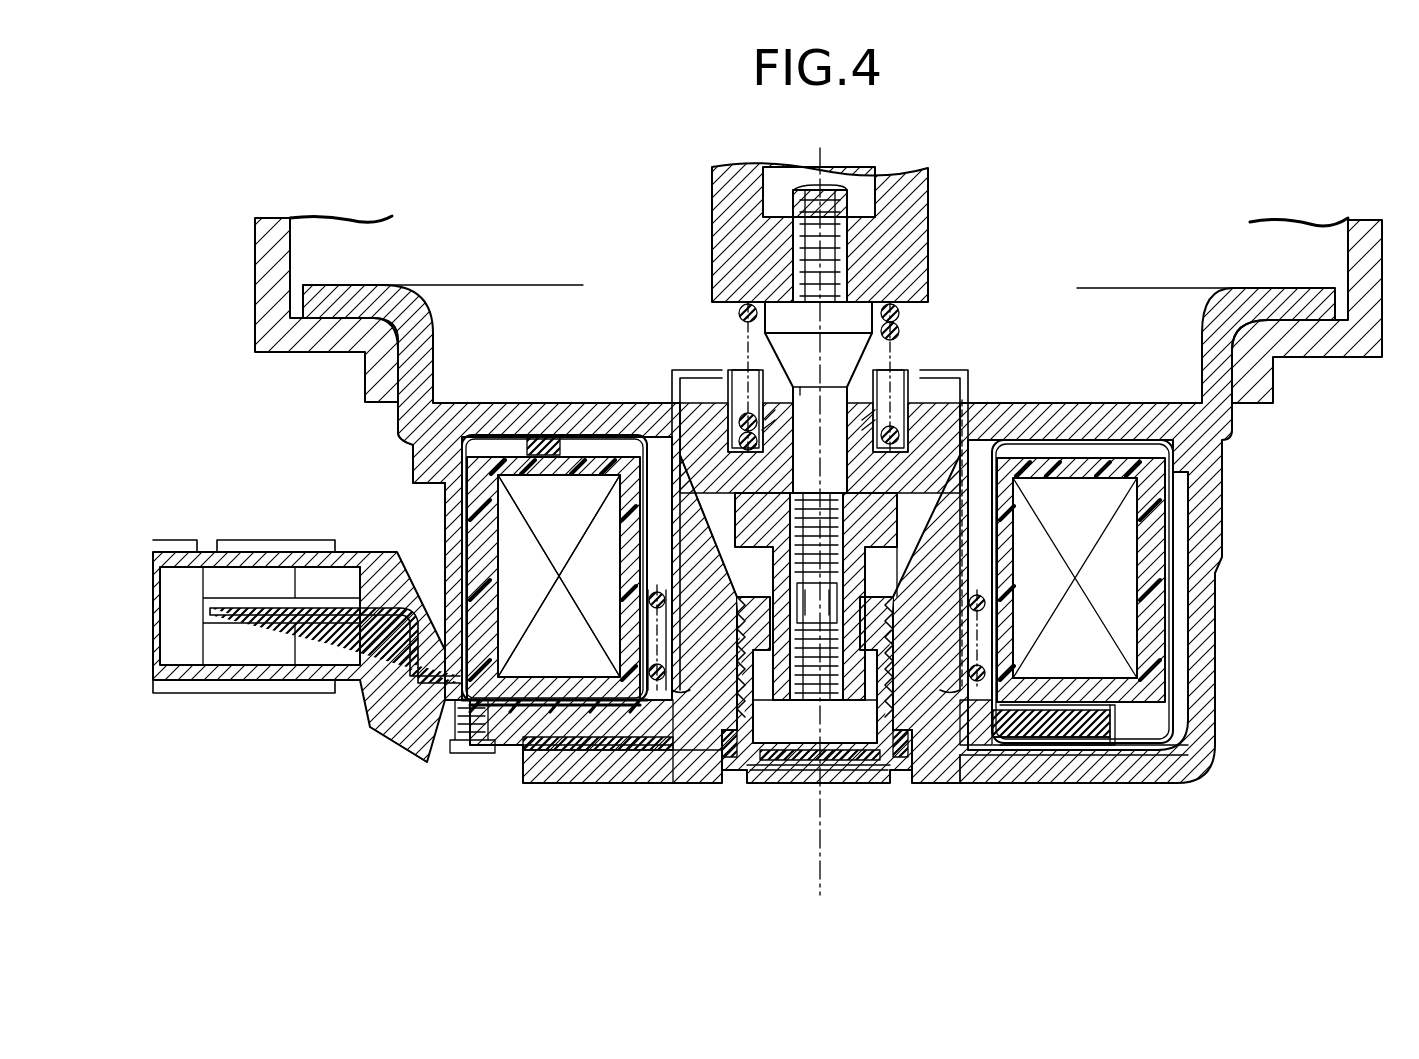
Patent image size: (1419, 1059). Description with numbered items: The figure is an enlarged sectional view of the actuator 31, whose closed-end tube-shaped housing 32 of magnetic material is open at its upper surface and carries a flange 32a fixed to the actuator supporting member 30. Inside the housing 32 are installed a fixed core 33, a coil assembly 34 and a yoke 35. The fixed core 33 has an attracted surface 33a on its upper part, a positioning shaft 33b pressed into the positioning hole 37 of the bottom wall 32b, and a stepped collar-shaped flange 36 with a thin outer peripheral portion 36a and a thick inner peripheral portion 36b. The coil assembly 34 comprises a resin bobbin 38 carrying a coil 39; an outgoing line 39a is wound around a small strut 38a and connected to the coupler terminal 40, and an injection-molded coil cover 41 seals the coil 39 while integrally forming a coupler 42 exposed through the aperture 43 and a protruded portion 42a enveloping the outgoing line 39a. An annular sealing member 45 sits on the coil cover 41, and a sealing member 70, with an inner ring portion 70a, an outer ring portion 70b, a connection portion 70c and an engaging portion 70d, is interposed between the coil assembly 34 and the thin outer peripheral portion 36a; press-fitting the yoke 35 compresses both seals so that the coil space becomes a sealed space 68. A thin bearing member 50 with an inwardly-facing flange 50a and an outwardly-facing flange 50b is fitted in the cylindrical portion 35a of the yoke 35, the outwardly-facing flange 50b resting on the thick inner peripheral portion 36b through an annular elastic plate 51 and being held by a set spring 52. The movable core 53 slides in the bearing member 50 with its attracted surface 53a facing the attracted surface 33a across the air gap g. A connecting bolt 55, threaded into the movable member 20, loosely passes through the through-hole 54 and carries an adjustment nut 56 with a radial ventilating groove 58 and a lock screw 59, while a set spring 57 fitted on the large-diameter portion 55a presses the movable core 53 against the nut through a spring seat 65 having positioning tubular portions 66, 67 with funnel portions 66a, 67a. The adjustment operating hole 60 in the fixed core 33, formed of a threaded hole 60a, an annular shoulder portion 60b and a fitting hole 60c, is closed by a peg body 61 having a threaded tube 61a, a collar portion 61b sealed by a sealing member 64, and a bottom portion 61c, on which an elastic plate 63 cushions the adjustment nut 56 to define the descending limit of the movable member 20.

The movable member 20 is at (910, 194).
The actuator supporting member 30 is at (270, 250).
The actuator 31 is at (1202, 626).
The housing 32 is at (1228, 524).
The flange 32a is at (1293, 300).
The bottom wall 32b is at (975, 775).
The fixed core 33 is at (968, 592).
The attracted surface 33a is at (1017, 626).
The positioning shaft 33b is at (930, 788).
The coil assembly 34 is at (528, 492).
The yoke 35 is at (1052, 405).
The cylindrical portion 35a is at (1000, 518).
The flange 36 is at (675, 846).
The thin outer peripheral portion 36a is at (578, 775).
The thick inner peripheral portion 36b is at (655, 760).
The positioning hole 37 is at (960, 788).
The bobbin 38 is at (628, 537).
The small strut 38a is at (478, 756).
The coil 39 is at (545, 637).
The outgoing line 39a is at (450, 750).
The coupler terminal 40 is at (236, 620).
The coil cover 41 is at (475, 450).
The coupler 42 is at (260, 548).
The protruded portion 42a is at (395, 738).
The aperture 43 is at (430, 486).
The sealing member 45 is at (547, 435).
The bearing member 50 is at (655, 448).
The inwardly-facing flange 50a is at (678, 372).
The outwardly-facing flange 50b is at (620, 712).
The annular elastic plate 51 is at (700, 735).
The set spring 52 is at (648, 600).
The movable core 53 is at (963, 420).
The attracted surface 53a is at (970, 498).
The through-hole 54 is at (855, 480).
The connecting bolt 55 is at (850, 403).
The large-diameter portion 55a is at (775, 310).
The adjustment nut 56 is at (770, 640).
The set spring 57 is at (902, 328).
The radial ventilating groove 58 is at (745, 496).
The lock screw 59 is at (822, 687).
The adjustment operating hole 60 is at (905, 790).
The threaded hole 60a is at (722, 655).
The annular shoulder portion 60b is at (750, 748).
The fitting hole 60c is at (737, 783).
The peg body 61 is at (800, 788).
The threaded tube 61a is at (985, 595).
The collar portion 61b is at (910, 746).
The bottom portion 61c is at (772, 786).
The elastic plate 63 is at (835, 783).
The sealing member 64 is at (724, 732).
The spring seat 65 is at (775, 455).
The inside positioning tubular portion 66 is at (838, 480).
The funnel portion 66a is at (765, 394).
The outside positioning tubular portion 67 is at (905, 430).
The funnel portion 67a is at (735, 385).
The sealed space 68 is at (870, 590).
The sealing member 70 is at (1050, 715).
The inner ring portion 70a is at (1040, 748).
The outer ring portion 70b is at (1110, 748).
The connection portion 70c is at (1065, 748).
The engaging portion 70d is at (1000, 748).
The air gap g is at (990, 580).